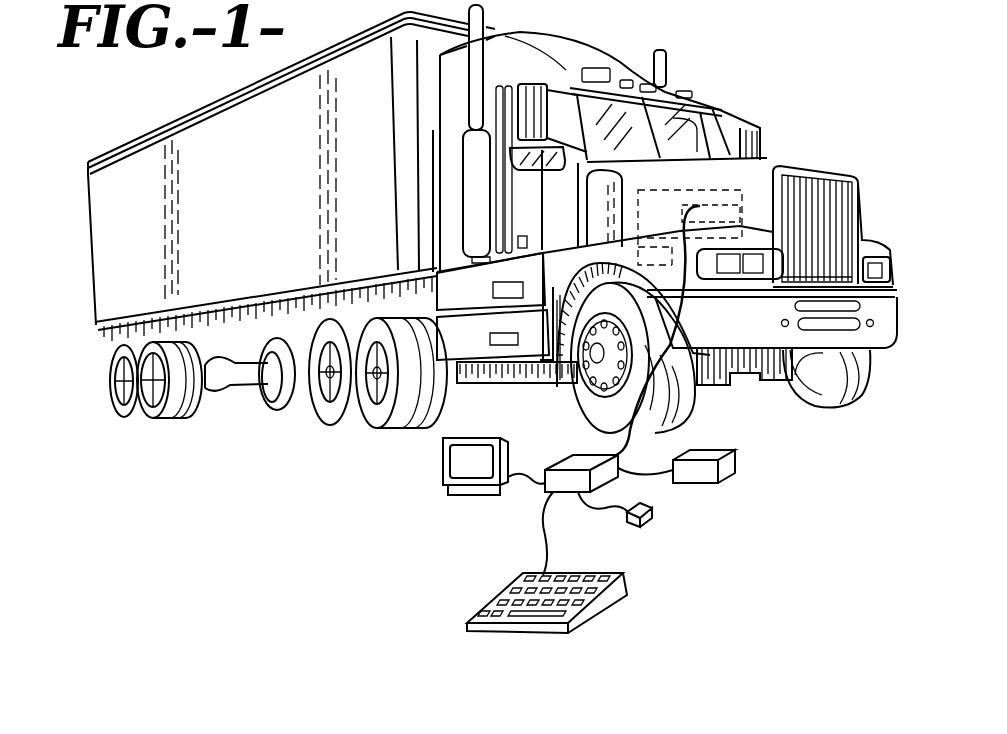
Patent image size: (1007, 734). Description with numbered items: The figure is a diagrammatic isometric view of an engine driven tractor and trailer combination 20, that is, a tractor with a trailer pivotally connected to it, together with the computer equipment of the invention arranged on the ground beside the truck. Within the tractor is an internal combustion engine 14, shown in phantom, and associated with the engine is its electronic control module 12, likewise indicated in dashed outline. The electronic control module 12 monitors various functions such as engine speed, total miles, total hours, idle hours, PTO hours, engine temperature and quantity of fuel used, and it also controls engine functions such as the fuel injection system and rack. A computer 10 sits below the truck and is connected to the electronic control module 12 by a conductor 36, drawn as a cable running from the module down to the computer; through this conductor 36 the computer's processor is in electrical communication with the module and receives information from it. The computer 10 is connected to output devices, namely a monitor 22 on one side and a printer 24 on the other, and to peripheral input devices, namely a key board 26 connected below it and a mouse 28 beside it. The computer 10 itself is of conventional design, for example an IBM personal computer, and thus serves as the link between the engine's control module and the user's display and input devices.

The engine driven tractor and trailer combination 20 is at (492, 219).
The internal combustion engine 14 is at (753, 184).
The electronic control module 12 is at (753, 212).
The computer 10 is at (568, 445).
The conductor 36 is at (636, 450).
The monitor 22 is at (443, 462).
The printer 24 is at (735, 478).
The mouse 28 is at (655, 514).
The key board 26 is at (615, 600).